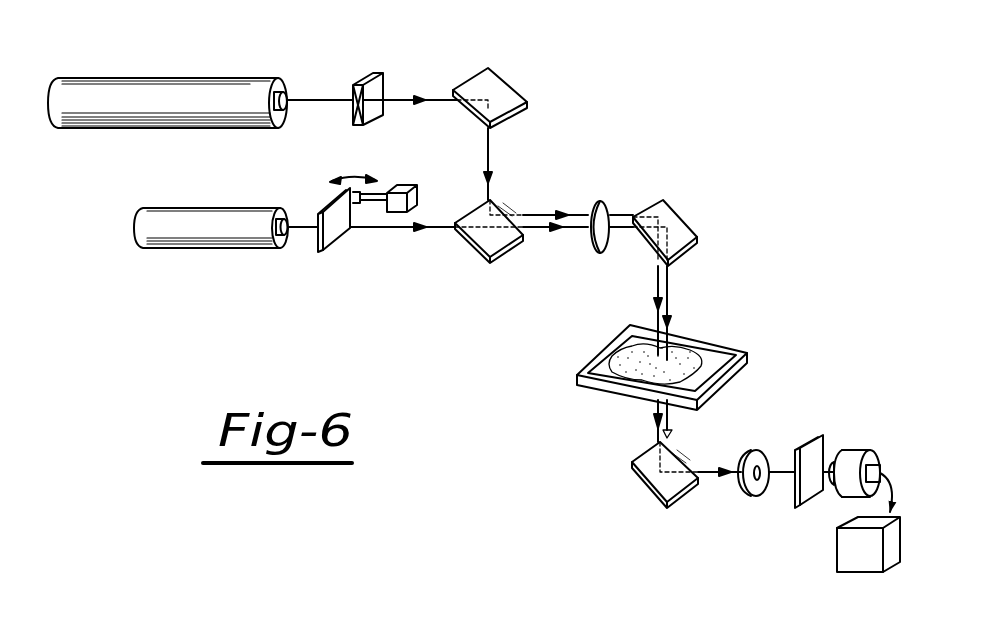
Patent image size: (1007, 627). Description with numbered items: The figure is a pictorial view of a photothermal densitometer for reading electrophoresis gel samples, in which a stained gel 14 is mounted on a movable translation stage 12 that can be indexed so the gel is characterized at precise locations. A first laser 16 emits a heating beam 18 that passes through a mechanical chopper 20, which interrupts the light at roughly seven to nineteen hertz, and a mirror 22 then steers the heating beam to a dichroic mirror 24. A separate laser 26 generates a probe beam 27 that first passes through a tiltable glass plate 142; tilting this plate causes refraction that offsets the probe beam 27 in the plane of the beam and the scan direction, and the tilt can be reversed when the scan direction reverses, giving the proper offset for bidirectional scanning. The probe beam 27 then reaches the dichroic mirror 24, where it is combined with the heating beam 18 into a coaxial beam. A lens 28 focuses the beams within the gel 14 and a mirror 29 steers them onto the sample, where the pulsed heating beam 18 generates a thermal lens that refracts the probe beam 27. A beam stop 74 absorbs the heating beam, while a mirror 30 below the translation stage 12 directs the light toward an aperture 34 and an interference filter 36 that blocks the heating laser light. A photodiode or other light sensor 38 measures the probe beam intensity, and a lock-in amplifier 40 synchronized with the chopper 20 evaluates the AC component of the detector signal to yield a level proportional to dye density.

The translation stage 12 is at (592, 351).
The gel 14 is at (706, 362).
The laser 16 is at (196, 77).
The heating beam 18 is at (322, 96).
The mechanical chopper 20 is at (396, 76).
The mirror 22 is at (494, 82).
The dichroic mirror 24 is at (491, 262).
The laser 26 is at (168, 206).
The probe beam 27 is at (300, 220).
The lens 28 is at (648, 160).
The mirror 29 is at (668, 212).
The mirror 30 is at (637, 472).
The aperture 34 is at (753, 460).
The interference filter 36 is at (817, 435).
The light sensor 38 is at (864, 450).
The lock-in amplifier 40 is at (850, 543).
The beam stop 74 is at (673, 433).
The tiltable glass plate 142 is at (320, 254).